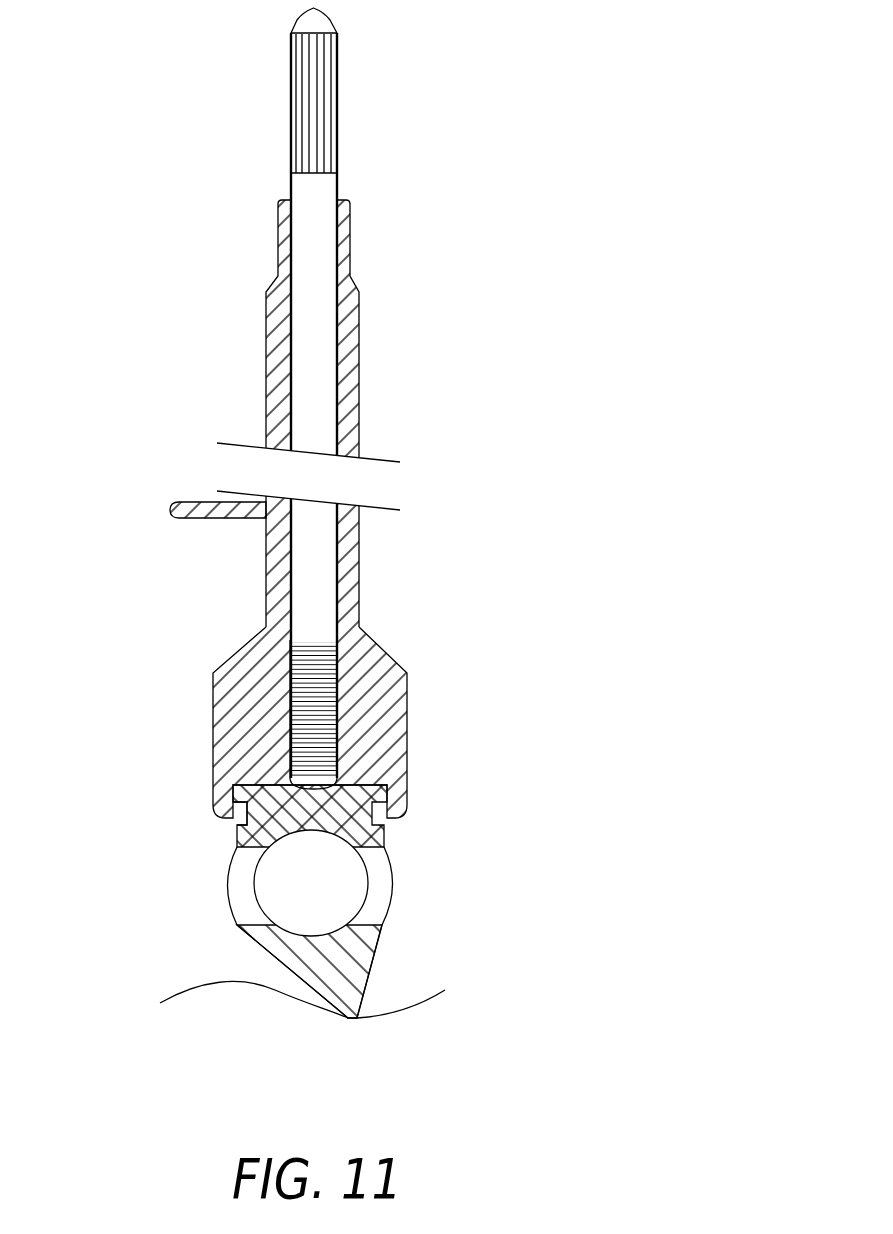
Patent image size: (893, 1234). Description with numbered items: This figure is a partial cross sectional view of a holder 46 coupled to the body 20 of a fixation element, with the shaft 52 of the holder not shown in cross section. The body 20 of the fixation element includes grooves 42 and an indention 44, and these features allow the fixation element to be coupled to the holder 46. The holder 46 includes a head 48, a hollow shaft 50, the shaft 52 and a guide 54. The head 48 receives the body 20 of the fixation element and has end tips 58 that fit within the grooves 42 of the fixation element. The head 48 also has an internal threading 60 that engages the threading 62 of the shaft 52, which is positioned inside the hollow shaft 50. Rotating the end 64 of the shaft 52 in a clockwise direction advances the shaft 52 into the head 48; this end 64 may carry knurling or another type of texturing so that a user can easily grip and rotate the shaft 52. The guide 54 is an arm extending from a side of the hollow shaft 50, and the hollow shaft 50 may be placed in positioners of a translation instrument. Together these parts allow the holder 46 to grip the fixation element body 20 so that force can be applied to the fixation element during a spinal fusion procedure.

The body 20 is at (380, 907).
The grooves 42 is at (245, 823).
The indention 44 is at (233, 850).
The holder 46 is at (467, 308).
The head 48 is at (402, 676).
The hollow shaft 50 is at (363, 410).
The shaft 52 is at (322, 201).
The guide 54 is at (178, 506).
The end tips 58 is at (387, 813).
The internal threading 60 is at (287, 717).
The threading 62 is at (297, 693).
The end 64 is at (337, 77).